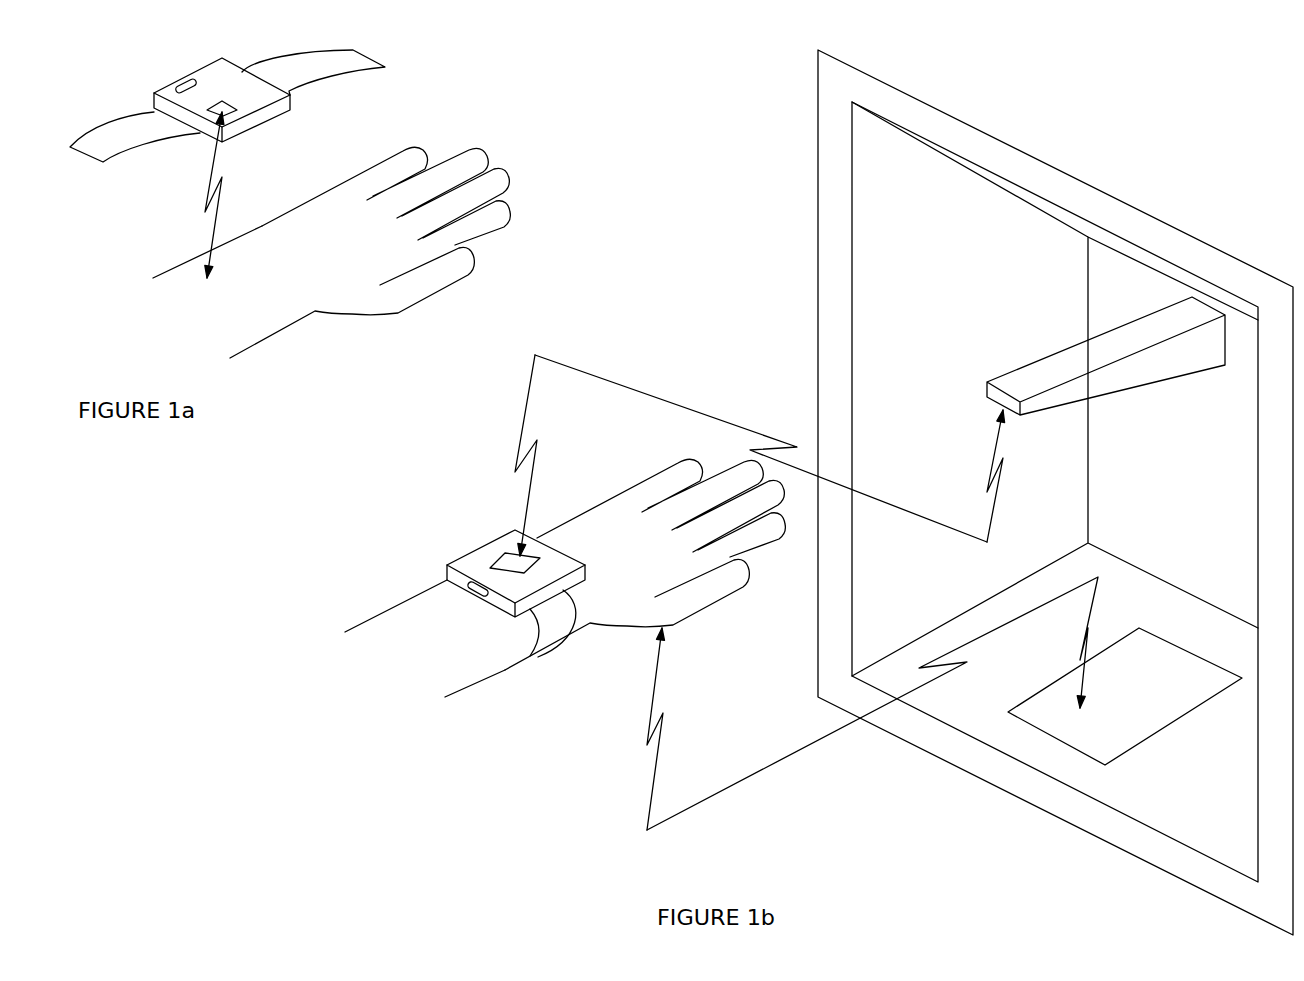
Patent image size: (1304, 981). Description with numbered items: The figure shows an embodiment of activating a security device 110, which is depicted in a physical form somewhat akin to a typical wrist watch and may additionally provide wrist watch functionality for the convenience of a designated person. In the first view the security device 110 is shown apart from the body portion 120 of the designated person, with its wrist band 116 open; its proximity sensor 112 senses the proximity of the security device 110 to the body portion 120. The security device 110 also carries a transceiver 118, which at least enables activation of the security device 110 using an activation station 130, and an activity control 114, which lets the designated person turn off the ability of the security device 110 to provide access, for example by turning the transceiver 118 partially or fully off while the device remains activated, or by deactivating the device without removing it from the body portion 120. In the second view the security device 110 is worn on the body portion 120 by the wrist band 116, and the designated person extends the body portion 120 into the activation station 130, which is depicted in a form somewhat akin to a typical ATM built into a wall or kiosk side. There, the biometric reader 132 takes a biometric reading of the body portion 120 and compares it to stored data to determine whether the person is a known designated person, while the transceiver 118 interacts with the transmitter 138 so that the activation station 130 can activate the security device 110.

In FIG. 1A, the security device 110 is at (405, 88).
In FIG. 1B, the security device 110 is at (442, 546).
In FIG. 1A, the proximity sensor 112 is at (231, 110).
In FIG. 1A, the activity control 114 is at (177, 83).
In FIG. 1B, the activity control 114 is at (470, 592).
In FIG. 1A, the wrist band 116 is at (307, 67).
In FIG. 1B, the wrist band 116 is at (557, 635).
In FIG. 1B, the transceiver 118 is at (500, 570).
In FIG. 1A, the body portion 120 is at (255, 322).
In FIG. 1B, the body portion 120 is at (477, 660).
In FIG. 1B, the activation station 130 is at (1036, 836).
In FIG. 1B, the biometric reader 132 is at (1036, 712).
In FIG. 1B, the transmitter 138 is at (1022, 380).